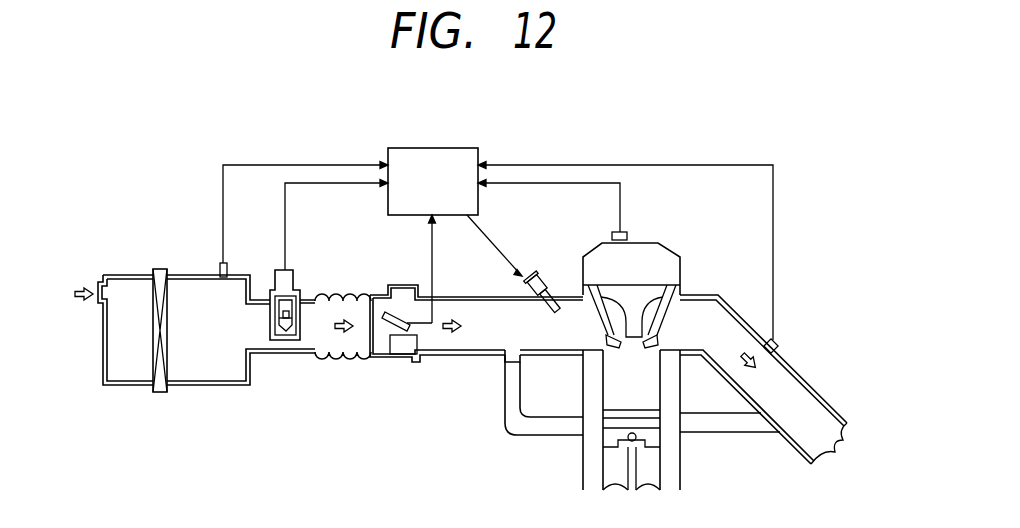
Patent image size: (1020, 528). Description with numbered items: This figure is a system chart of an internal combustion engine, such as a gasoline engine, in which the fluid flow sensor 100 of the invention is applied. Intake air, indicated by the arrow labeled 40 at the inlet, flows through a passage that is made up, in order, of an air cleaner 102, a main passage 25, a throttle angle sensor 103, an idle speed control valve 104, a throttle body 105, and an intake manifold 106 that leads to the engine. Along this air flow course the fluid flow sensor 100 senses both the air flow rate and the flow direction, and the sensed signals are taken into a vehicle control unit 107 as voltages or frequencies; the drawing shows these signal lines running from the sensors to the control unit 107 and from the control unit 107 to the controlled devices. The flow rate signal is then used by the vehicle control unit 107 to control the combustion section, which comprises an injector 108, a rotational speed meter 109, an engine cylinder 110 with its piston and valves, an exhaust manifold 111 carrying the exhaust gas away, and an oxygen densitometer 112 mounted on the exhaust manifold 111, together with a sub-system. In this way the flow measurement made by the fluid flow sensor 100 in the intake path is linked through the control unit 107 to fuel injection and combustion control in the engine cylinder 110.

The intake air 40 is at (86, 285).
The air cleaner 102 is at (198, 287).
The fluid flow sensor 100 is at (283, 282).
The main passage 25 is at (301, 338).
The throttle body 105 is at (362, 348).
The throttle angle sensor 103 is at (400, 287).
The idle speed control valve 104 is at (406, 343).
The intake manifold 106 is at (563, 328).
The vehicle control unit 107 is at (432, 150).
The injector 108 is at (546, 280).
The rotational speed meter 109 is at (628, 236).
The engine cylinder 110 is at (622, 383).
The exhaust manifold 111 is at (790, 385).
The oxygen densitometer 112 is at (780, 342).